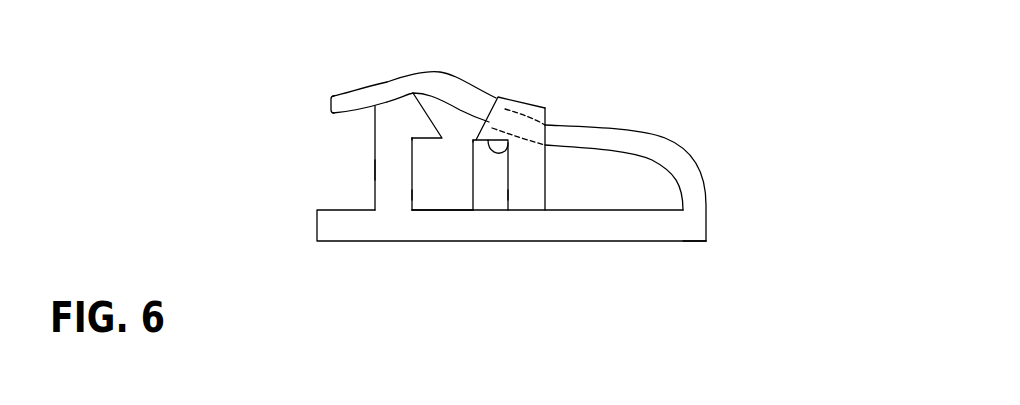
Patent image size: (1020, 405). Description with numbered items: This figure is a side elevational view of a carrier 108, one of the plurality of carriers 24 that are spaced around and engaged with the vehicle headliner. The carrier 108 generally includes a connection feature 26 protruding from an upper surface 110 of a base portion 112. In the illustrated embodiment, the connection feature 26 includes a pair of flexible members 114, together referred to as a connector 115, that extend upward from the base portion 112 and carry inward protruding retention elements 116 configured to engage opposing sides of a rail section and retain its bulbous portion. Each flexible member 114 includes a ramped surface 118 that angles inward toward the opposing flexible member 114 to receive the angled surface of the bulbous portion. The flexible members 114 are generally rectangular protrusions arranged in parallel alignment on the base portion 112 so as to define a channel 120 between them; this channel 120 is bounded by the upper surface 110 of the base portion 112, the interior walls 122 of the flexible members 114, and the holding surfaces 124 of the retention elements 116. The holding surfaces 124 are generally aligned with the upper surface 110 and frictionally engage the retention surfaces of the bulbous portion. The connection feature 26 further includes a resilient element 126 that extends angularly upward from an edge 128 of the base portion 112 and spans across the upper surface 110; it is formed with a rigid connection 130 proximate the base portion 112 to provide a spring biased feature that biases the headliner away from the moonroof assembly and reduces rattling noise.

The carrier 24 is at (333, 103).
The carrier 108 is at (246, 79).
The connection feature 26 is at (469, 68).
The upper surface 110 is at (332, 210).
The base portion 112 is at (312, 220).
The flexible members 114 is at (377, 153).
The connector 115 is at (352, 162).
The inward protruding retention elements 116 is at (510, 123).
The ramped surface 118 is at (436, 138).
The channel 120 is at (435, 205).
The interior walls 122 is at (414, 178).
The holding surfaces 124 is at (420, 142).
The resilient element 126 is at (632, 138).
The edge 128 is at (707, 232).
The rigid connection 130 is at (699, 173).